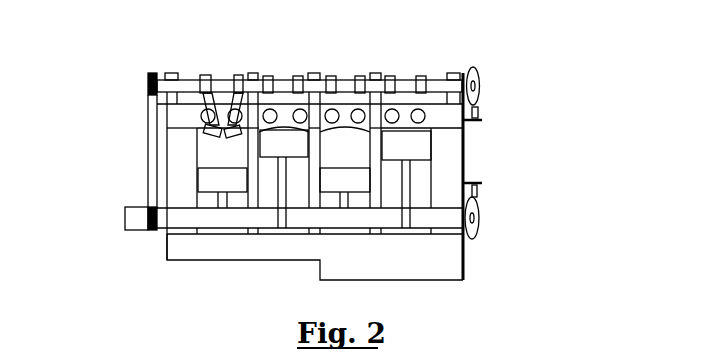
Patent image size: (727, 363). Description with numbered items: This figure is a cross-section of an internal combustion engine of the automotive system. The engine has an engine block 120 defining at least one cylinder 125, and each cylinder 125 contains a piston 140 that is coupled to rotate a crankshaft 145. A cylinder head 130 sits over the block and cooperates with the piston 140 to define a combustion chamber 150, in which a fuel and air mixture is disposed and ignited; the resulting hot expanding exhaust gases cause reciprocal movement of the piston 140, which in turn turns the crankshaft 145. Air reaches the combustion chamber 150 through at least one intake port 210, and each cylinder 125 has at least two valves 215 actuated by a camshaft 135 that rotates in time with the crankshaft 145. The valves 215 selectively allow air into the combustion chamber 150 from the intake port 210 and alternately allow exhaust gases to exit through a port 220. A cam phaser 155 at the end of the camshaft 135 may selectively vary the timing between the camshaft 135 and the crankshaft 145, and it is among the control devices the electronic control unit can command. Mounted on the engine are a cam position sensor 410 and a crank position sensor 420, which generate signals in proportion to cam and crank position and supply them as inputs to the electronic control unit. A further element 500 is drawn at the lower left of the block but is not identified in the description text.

The engine block 120 is at (168, 170).
The cylinder 125 is at (321, 157).
The cylinder head 130 is at (168, 123).
The camshaft 135 is at (214, 76).
The piston 140 is at (348, 178).
The crankshaft 145 is at (192, 220).
The combustion chamber 150 is at (412, 131).
The cam phaser 155 is at (148, 82).
The intake port 210 is at (337, 108).
The valves 215 is at (222, 128).
The exhaust port 220 is at (290, 106).
The cam position sensor 410 is at (481, 120).
The crank position sensor 420 is at (481, 183).
The motor 500 is at (125, 218).